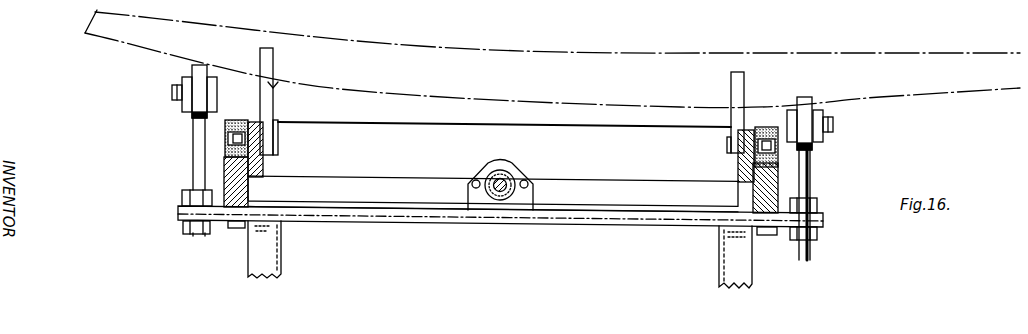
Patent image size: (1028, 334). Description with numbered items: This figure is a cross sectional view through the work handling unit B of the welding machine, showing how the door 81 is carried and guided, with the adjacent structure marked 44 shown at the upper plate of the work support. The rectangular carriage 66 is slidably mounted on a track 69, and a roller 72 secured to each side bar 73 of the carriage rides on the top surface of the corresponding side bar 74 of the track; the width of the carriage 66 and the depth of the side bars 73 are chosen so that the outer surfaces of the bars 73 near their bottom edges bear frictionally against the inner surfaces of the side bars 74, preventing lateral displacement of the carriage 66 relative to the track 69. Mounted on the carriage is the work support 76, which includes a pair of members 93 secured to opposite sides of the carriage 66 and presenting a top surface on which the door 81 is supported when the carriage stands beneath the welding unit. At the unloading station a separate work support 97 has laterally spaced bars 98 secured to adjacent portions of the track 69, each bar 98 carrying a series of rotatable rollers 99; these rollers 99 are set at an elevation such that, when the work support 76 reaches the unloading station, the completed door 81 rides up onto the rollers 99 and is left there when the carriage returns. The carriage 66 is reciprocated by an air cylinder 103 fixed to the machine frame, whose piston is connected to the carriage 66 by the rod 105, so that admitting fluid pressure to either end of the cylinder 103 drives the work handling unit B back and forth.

The door 81 is at (548, 48).
The work support 76 is at (277, 59).
The plate mark 44 is at (278, 82).
The member 93 is at (274, 108).
The roller 72 is at (236, 121).
The side bar 73 is at (262, 162).
The track 69 is at (217, 177).
The carriage 66 is at (608, 182).
The side bar 74 is at (238, 181).
The roller 99 is at (200, 66).
The bar 98 is at (216, 90).
The work support 97 is at (173, 84).
The work handling unit B is at (841, 130).
The air cylinder 103 is at (525, 176).
The rod 105 is at (505, 192).